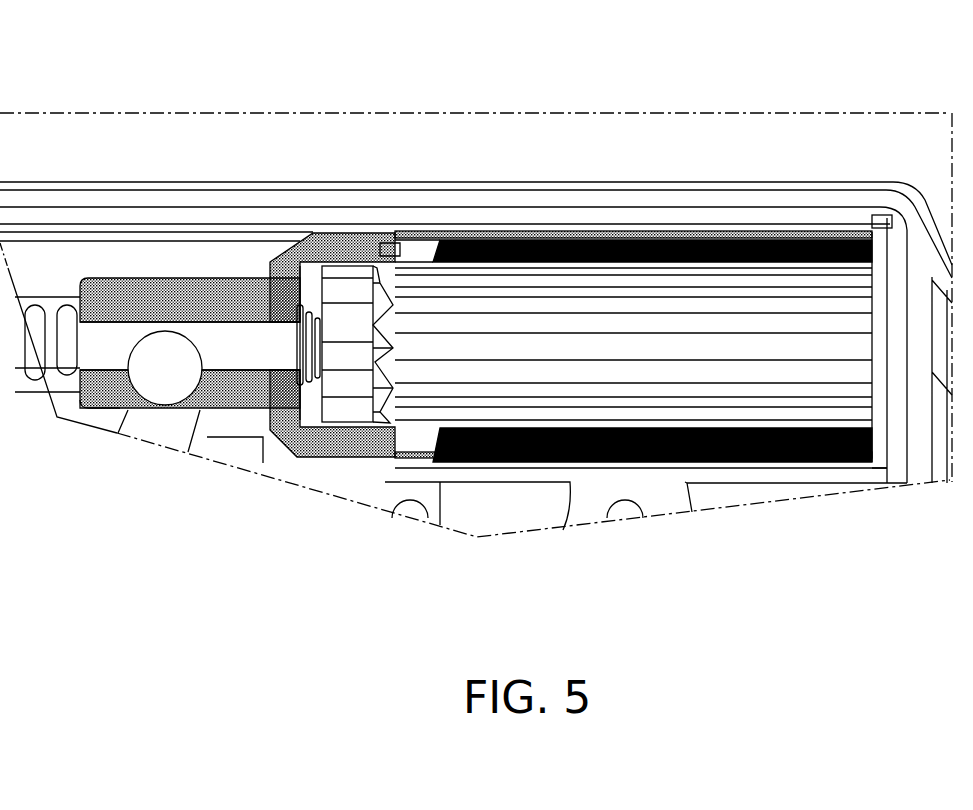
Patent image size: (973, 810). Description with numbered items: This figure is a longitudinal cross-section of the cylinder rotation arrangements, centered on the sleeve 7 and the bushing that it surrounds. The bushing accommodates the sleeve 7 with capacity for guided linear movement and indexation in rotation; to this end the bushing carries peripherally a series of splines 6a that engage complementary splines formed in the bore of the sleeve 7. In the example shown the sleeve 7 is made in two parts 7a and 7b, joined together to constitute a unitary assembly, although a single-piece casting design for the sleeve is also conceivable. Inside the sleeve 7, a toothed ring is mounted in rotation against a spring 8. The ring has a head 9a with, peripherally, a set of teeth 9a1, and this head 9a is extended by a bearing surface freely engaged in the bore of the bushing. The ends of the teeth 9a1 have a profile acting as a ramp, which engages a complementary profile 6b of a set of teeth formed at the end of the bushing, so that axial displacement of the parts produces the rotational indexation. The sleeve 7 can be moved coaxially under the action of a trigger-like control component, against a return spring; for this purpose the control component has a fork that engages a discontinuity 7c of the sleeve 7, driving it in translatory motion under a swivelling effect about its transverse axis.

The sleeve 7 is at (153, 272).
The first part of the sleeve 7a is at (355, 240).
The second part of the sleeve 7b is at (745, 233).
The discontinuity of the sleeve 7c is at (90, 400).
The splines 6a is at (775, 390).
The complementary profile 6b is at (380, 245).
The spring 8 is at (307, 380).
The head 9a is at (340, 410).
The teeth 9a1 is at (395, 378).